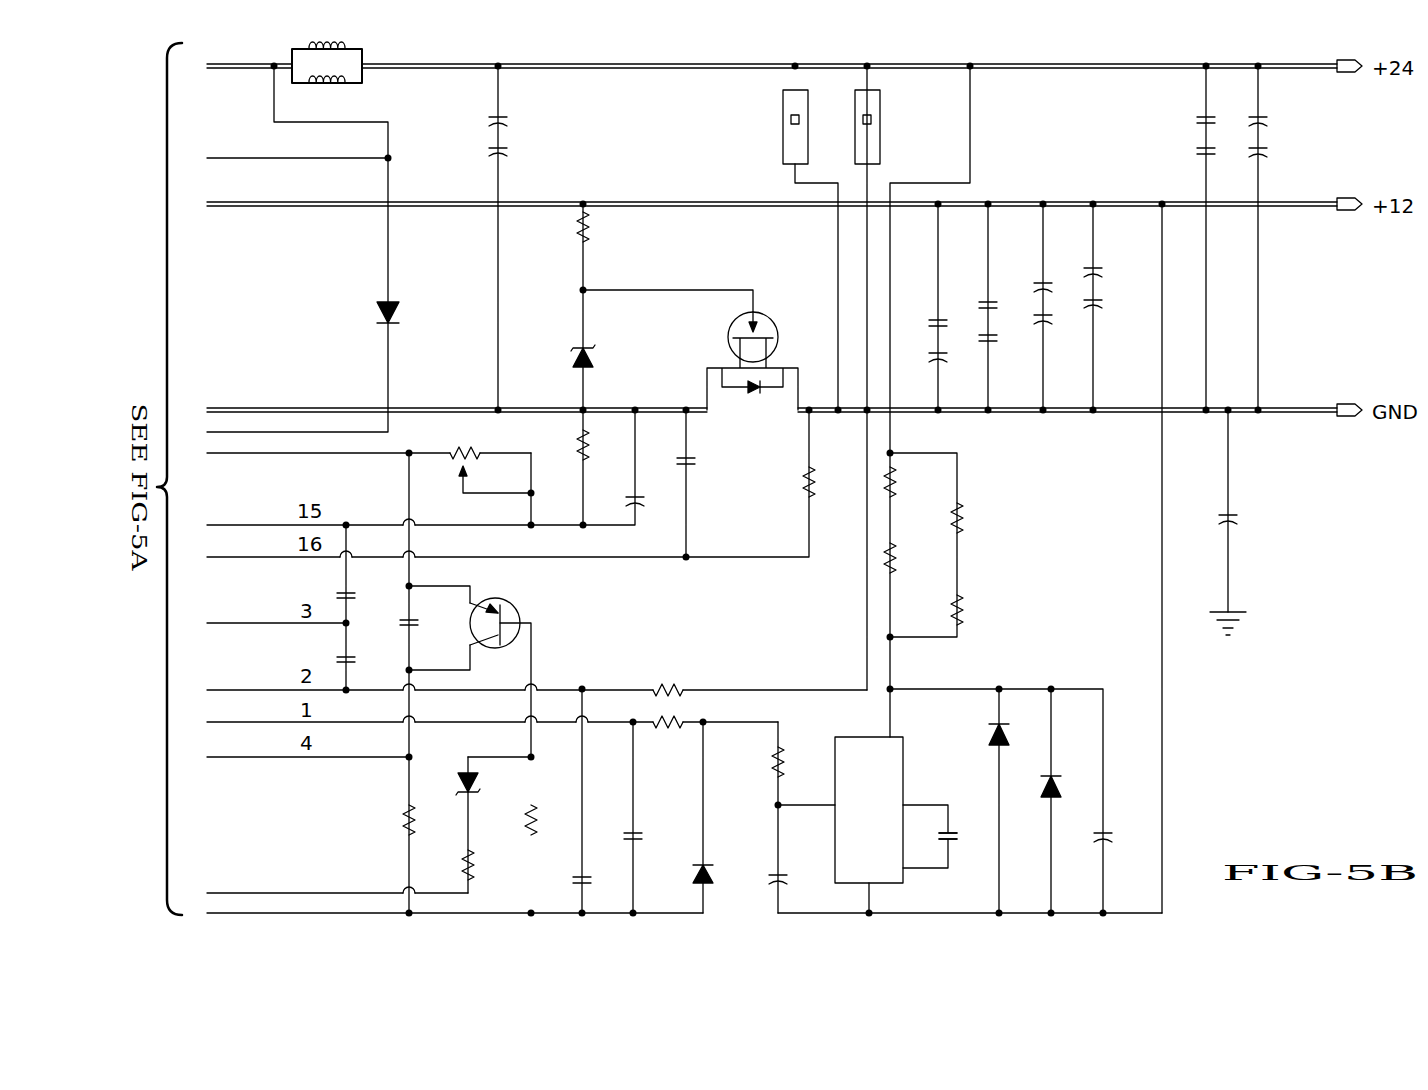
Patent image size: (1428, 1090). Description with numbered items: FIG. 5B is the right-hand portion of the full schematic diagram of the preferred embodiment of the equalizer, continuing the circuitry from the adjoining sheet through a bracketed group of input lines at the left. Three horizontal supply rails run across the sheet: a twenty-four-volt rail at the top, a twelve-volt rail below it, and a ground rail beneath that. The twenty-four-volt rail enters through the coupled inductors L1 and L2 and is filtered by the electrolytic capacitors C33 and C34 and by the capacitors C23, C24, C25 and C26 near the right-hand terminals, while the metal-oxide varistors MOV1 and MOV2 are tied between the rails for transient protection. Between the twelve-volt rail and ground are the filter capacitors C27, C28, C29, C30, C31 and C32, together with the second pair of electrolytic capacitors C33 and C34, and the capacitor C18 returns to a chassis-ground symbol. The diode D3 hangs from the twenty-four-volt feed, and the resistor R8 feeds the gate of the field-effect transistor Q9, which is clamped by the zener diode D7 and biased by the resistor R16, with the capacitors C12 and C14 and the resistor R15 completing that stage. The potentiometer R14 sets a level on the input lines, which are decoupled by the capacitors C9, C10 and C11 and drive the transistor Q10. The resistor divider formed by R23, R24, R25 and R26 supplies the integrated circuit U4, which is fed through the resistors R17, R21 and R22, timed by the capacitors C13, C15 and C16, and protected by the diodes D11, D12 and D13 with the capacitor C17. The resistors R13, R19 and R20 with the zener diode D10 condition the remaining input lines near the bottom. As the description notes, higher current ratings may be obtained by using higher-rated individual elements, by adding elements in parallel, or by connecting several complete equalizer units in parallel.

The inductor L1 is at (343, 60).
The inductor L2 is at (351, 85).
The capacitor C9 is at (362, 598).
The capacitor C10 is at (431, 626).
The capacitor C11 is at (580, 766).
The capacitor C12 is at (652, 512).
The capacitor C13 is at (651, 823).
The capacitor C14 is at (704, 477).
The capacitor C15 is at (601, 868).
The capacitor C16 is at (966, 850).
The capacitor C17 is at (1121, 851).
The capacitor C18 is at (1250, 572).
The capacitor C23 is at (1181, 121).
The capacitor C24 is at (1181, 153).
The electrolytic capacitor C25 is at (1289, 111).
The electrolytic capacitor C26 is at (1289, 158).
The capacitor C27 is at (956, 298).
The capacitor C28 is at (956, 376).
The capacitor C29 is at (1006, 279).
The capacitor C30 is at (1006, 359).
The capacitor C31 is at (1060, 261).
The capacitor C32 is at (1060, 341).
The electrolytic capacitor C33 is at (813, 175).
The electrolytic capacitor C34 is at (813, 245).
The resistor R8 is at (600, 228).
The resistor R13 is at (431, 821).
The potentiometer R14 is at (489, 460).
The resistor R15 is at (786, 482).
The resistor R16 is at (604, 446).
The resistor R17 is at (667, 674).
The resistor R19 is at (490, 866).
The resistor R20 is at (551, 821).
The resistor R21 is at (667, 737).
The resistor R22 is at (798, 750).
The resistor R23 is at (911, 482).
The resistor R24 is at (979, 518).
The resistor R25 is at (911, 558).
The resistor R26 is at (979, 610).
The diode D3 is at (405, 314).
The zener diode D7 is at (601, 355).
The zener diode D10 is at (491, 780).
The diode D11 is at (684, 875).
The diode D12 is at (977, 733).
The diode D13 is at (1070, 774).
The MOSFET transistor Q9 is at (753, 351).
The PNP transistor Q10 is at (495, 623).
The integrated circuit U4 is at (886, 812).
The metal oxide varistor MOV1 is at (760, 127).
The metal oxide varistor MOV2 is at (901, 127).